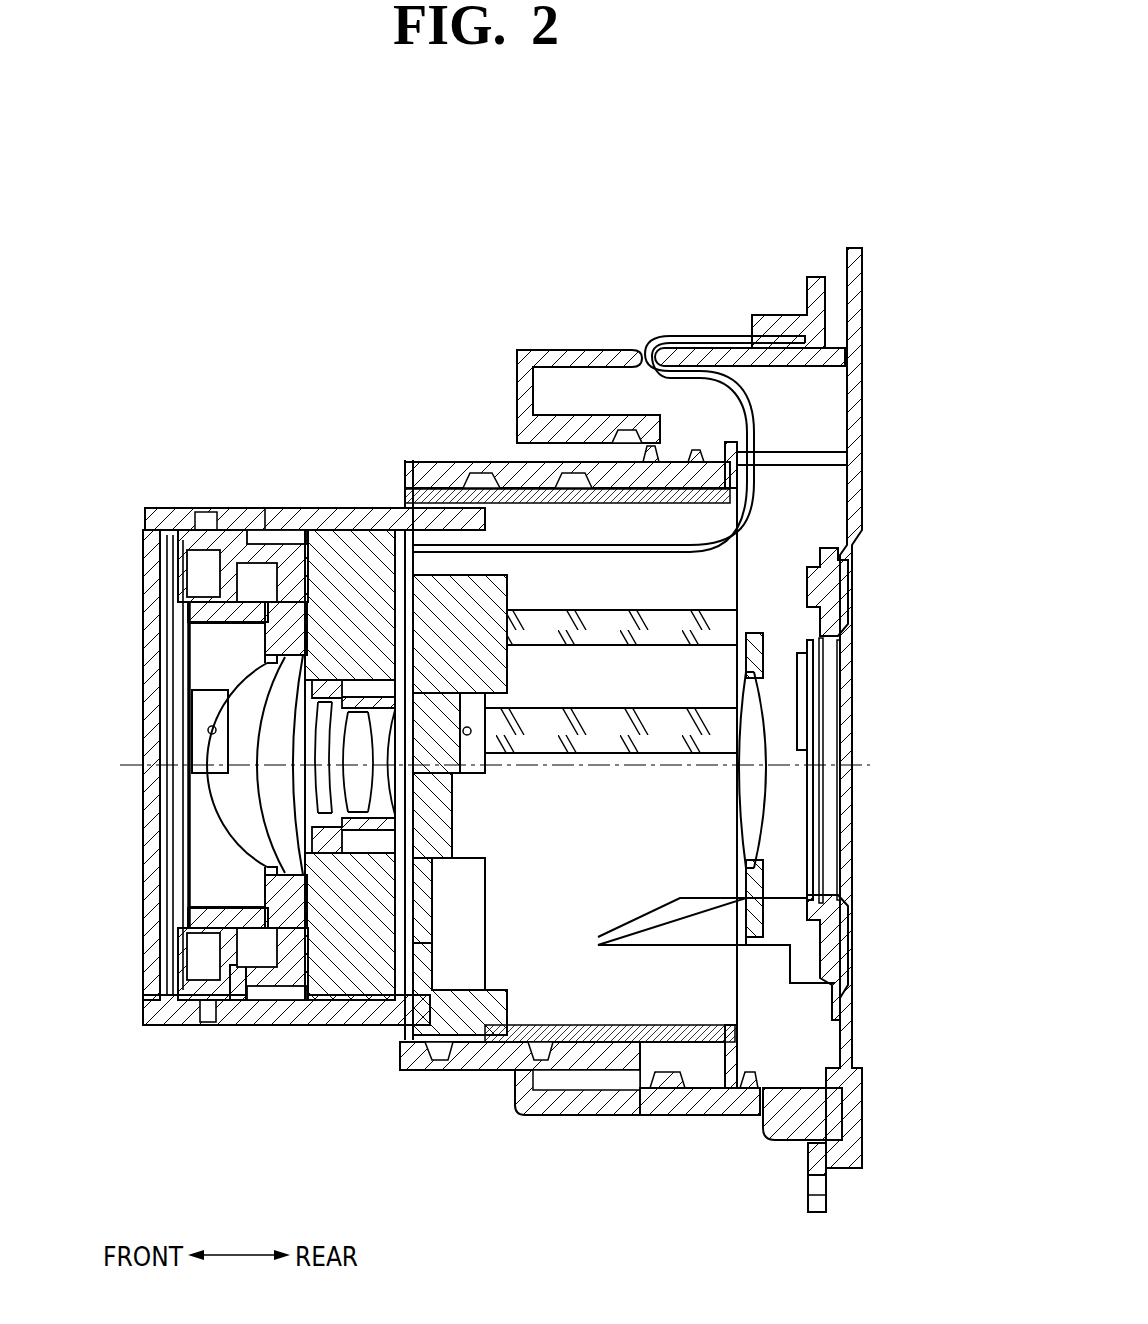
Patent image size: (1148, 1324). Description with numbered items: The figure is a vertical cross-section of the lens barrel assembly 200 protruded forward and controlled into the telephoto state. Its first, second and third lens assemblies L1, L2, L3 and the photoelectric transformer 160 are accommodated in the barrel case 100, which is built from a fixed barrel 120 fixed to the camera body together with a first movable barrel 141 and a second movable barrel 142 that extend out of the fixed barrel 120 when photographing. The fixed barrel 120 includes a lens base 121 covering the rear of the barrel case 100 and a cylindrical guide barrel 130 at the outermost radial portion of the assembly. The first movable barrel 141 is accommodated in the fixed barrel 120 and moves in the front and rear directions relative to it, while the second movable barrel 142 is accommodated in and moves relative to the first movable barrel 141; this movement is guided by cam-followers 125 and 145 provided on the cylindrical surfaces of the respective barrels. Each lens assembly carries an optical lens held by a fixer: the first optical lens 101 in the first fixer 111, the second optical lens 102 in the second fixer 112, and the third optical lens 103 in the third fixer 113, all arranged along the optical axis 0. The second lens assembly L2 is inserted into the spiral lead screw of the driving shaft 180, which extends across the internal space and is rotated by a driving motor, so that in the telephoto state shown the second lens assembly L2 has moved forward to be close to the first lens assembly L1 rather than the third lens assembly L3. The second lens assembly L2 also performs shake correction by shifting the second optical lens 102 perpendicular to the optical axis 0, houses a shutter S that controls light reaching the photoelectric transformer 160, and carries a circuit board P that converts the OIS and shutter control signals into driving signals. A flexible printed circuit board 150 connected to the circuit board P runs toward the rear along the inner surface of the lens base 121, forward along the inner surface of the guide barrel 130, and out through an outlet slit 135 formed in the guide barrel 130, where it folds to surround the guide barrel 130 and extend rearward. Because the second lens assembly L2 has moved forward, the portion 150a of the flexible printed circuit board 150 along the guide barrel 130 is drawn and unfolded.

The barrel case 100 is at (376, 303).
The lens barrel assembly 200 is at (124, 1094).
The optical axis 0 is at (481, 777).
The first optical lens 101 is at (277, 720).
The second optical lens 102 is at (355, 755).
The third optical lens 103 is at (755, 734).
The first fixer 111 is at (185, 619).
The second fixer 112 is at (265, 672).
The third fixer 113 is at (752, 654).
The fixed barrel 120 is at (878, 190).
The lens base 121 is at (856, 250).
The guide barrel 130 is at (816, 277).
The outlet slit 135 is at (632, 330).
The cam-follower 125 is at (623, 428).
The first movable barrel 141 is at (408, 462).
The second movable barrel 142 is at (301, 512).
The cam-follower 145 is at (442, 1050).
The flexible printed circuit board 150 is at (752, 423).
The portion of the flexible printed circuit board 150a is at (600, 553).
The photoelectric transformer 160 is at (830, 818).
The driving shaft 180 is at (594, 630).
The circuit board P is at (400, 598).
The shutter S is at (327, 827).
The first lens assembly L1 is at (267, 962).
The second lens assembly L2 is at (360, 866).
The third lens assembly L3 is at (757, 966).